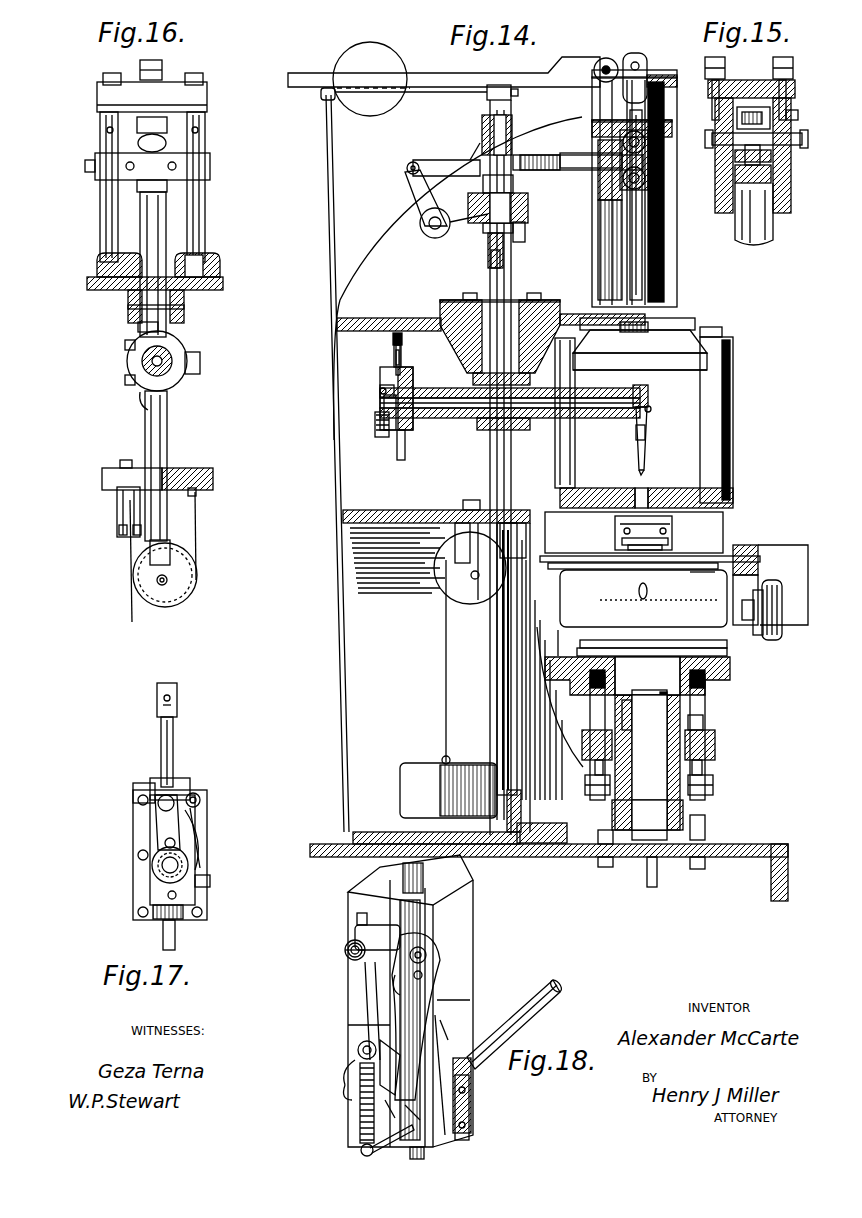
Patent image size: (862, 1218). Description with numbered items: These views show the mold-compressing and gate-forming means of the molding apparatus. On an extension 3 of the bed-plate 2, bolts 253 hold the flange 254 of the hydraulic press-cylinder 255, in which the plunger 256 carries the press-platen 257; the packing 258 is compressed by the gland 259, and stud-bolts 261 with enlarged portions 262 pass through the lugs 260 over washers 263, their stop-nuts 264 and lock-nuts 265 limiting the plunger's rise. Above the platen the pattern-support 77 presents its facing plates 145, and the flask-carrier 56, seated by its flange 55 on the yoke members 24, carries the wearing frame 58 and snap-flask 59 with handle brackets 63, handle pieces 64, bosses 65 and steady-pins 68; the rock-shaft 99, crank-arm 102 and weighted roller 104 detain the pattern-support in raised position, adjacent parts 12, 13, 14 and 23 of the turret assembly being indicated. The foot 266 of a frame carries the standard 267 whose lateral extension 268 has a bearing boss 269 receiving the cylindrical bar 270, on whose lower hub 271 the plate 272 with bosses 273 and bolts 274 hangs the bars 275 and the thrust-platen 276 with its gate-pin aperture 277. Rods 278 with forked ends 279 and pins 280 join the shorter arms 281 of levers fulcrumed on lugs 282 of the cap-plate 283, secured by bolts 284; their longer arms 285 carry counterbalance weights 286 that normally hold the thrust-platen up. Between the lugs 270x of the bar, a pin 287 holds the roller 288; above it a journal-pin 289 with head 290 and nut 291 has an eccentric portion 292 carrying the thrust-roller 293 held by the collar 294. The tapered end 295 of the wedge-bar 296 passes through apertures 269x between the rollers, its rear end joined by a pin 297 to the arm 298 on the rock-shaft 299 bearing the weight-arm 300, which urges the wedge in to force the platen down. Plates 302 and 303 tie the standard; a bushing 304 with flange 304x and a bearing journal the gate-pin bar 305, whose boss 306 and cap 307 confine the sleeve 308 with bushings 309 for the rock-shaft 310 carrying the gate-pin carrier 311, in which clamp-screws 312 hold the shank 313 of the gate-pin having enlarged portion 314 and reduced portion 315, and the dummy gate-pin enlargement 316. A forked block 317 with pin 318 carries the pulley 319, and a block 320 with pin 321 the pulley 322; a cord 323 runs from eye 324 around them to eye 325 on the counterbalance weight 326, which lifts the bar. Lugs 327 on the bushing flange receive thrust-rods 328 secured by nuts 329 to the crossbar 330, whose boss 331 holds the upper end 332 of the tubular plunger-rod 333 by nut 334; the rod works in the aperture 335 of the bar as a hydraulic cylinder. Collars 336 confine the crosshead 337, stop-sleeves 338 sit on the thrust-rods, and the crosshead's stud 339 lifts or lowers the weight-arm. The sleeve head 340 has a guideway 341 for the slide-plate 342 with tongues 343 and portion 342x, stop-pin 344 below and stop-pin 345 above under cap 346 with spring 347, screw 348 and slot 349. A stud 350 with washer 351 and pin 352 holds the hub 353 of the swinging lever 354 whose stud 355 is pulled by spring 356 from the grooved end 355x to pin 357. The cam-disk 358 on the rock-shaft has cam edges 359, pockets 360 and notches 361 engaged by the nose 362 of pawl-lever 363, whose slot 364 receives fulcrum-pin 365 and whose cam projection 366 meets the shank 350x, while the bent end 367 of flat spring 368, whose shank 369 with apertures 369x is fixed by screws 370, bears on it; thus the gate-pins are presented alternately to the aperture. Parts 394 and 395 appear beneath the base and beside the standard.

In FIG. 14, the frame bracket 2 is at (788, 872).
In FIG. 14, the base plate 3 is at (495, 858).
In FIG. 14, the side frame 12 is at (783, 585).
In FIG. 14, the bracket 13 is at (760, 552).
In FIG. 14, the plate 14 is at (715, 575).
In FIG. 14, the guide 23 is at (723, 603).
In FIG. 14, the carriage box 24 is at (643, 598).
In FIG. 14, the plate 55 is at (553, 556).
In FIG. 14, the rod 56 is at (557, 645).
In FIG. 14, the plate 58 is at (728, 556).
In FIG. 14, the housing 59 is at (634, 532).
In FIG. 14, the block 63 is at (672, 526).
In FIG. 14, the pin 64 is at (645, 522).
In FIG. 14, the bar 65 is at (630, 548).
In FIG. 14, the bar 68 is at (640, 551).
In FIG. 14, the plate 77 is at (580, 652).
In FIG. 14, the pinion 99 is at (744, 622).
In FIG. 14, the shaft 102 is at (752, 636).
In FIG. 14, the gear 104 is at (775, 640).
In FIG. 14, the plate 145 is at (700, 645).
In FIG. 14, the bolt 253 is at (705, 865).
In FIG. 14, the nut 254 is at (705, 825).
In FIG. 14, the hub lower portion 255 is at (683, 805).
In FIG. 14, the hub 256 is at (615, 808).
In FIG. 14, the base casting 257 is at (720, 686).
In FIG. 14, the spindle 258 is at (664, 715).
In FIG. 14, the bushing 259 is at (626, 715).
In FIG. 14, the collar 260 is at (582, 747).
In FIG. 14, the washer 261 is at (595, 768).
In FIG. 14, the bolt 262 is at (590, 713).
In FIG. 14, the washer 263 is at (705, 723).
In FIG. 14, the washer 264 is at (705, 768).
In FIG. 14, the nut 265 is at (649, 785).
In FIG. 14, the frame bottom 266 is at (380, 830).
In FIG. 14, the frame 267 is at (458, 474).
In FIG. 14, the cylinder 268 is at (623, 188).
In FIG. 14, the cylinder wall 269 is at (665, 207).
In FIG. 14, the wall portion 269x is at (660, 147).
In FIG. 14, the piston 270 is at (598, 218).
In FIG. 15, the piston 270 is at (754, 214).
In FIG. 15, the piston extension 270x is at (760, 155).
In FIG. 14, the cap plate 271 is at (605, 335).
In FIG. 14, the cross head 272 is at (640, 350).
In FIG. 14, the post 273 is at (733, 358).
In FIG. 14, the nut 274 is at (722, 330).
In FIG. 14, the post 275 is at (725, 437).
In FIG. 14, the cross plate 276 is at (672, 488).
In FIG. 14, the cross plate 277 is at (636, 488).
In FIG. 14, the rod 278 is at (626, 265).
In FIG. 14, the pin 279 is at (640, 68).
In FIG. 14, the link 280 is at (633, 55).
In FIG. 14, the pivot 281 is at (608, 58).
In FIG. 15, the nut 282 is at (712, 57).
In FIG. 14, the cap 283 is at (662, 77).
In FIG. 15, the cap 283 is at (750, 80).
In FIG. 15, the bolt 284 is at (786, 95).
In FIG. 14, the beam 285 is at (444, 72).
In FIG. 14, the weight 286 is at (370, 79).
In FIG. 15, the packing 287 is at (771, 160).
In FIG. 14, the packing ring 288 is at (646, 176).
In FIG. 15, the packing ring 288 is at (771, 175).
In FIG. 14, the bolt 289 is at (660, 133).
In FIG. 15, the bolt 289 is at (786, 118).
In FIG. 15, the pin 290 is at (798, 135).
In FIG. 14, the head 291 is at (656, 157).
In FIG. 14, the band 292 is at (618, 128).
In FIG. 15, the band 292 is at (754, 125).
In FIG. 14, the plate 293 is at (670, 125).
In FIG. 15, the plate 293 is at (744, 120).
In FIG. 14, the slot 294 is at (656, 188).
In FIG. 14, the arm 295 is at (591, 160).
In FIG. 14, the arm 296 is at (540, 156).
In FIG. 16, the arm 296 is at (138, 145).
In FIG. 14, the pivot 297 is at (413, 162).
In FIG. 14, the lever 298 is at (415, 212).
In FIG. 14, the roller 299 is at (428, 236).
In FIG. 14, the stop 300 is at (525, 240).
In FIG. 14, the plate 302 is at (380, 316).
In FIG. 16, the plate 302 is at (92, 290).
In FIG. 14, the plate 303 is at (375, 510).
In FIG. 16, the plate 303 is at (205, 465).
In FIG. 14, the bearing hub 304 is at (475, 345).
In FIG. 16, the bearing hub 304 is at (128, 316).
In FIG. 14, the bearing flange 304x is at (445, 305).
In FIG. 16, the bearing flange 304x is at (185, 258).
In FIG. 14, the shaft 305 is at (512, 279).
In FIG. 16, the shaft 305 is at (167, 447).
In FIG. 16, the nut 306 is at (185, 340).
In FIG. 16, the wheel 307 is at (127, 365).
In FIG. 14, the hub 308 is at (477, 424).
In FIG. 16, the hub 308 is at (170, 375).
In FIG. 14, the plate 309 is at (412, 420).
In FIG. 14, the rod 310 is at (420, 396).
In FIG. 17, the rod 310 is at (160, 870).
In FIG. 18, the rod 310 is at (528, 1013).
In FIG. 14, the block 311 is at (648, 393).
In FIG. 14, the pin 312 is at (651, 410).
In FIG. 14, the finger 313 is at (636, 426).
In FIG. 14, the collar 314 is at (645, 435).
In FIG. 16, the collar 314 is at (140, 400).
In FIG. 14, the tip 315 is at (645, 460).
In FIG. 16, the block 316 is at (200, 365).
In FIG. 16, the block 317 is at (178, 550).
In FIG. 16, the pin 318 is at (162, 585).
In FIG. 14, the disk 319 is at (500, 640).
In FIG. 16, the disk 319 is at (192, 592).
In FIG. 14, the bracket 320 is at (470, 563).
In FIG. 16, the bracket 320 is at (117, 508).
In FIG. 14, the nut 321 is at (463, 580).
In FIG. 16, the nut 321 is at (119, 532).
In FIG. 14, the wire 322 is at (473, 564).
In FIG. 16, the wire 322 is at (128, 556).
In FIG. 16, the cord 323 is at (197, 528).
In FIG. 16, the eye 324 is at (196, 493).
In FIG. 14, the cord 325 is at (450, 760).
In FIG. 14, the weight 326 is at (410, 770).
In FIG. 16, the bracket 327 is at (220, 265).
In FIG. 16, the post 328 is at (205, 213).
In FIG. 16, the nut 329 is at (103, 84).
In FIG. 16, the head 330 is at (152, 97).
In FIG. 16, the bolt 331 is at (162, 76).
In FIG. 14, the nut 332 is at (482, 125).
In FIG. 14, the sleeve 333 is at (488, 246).
In FIG. 14, the nut 334 is at (511, 102).
In FIG. 14, the pin 335 is at (490, 266).
In FIG. 14, the collar 336 is at (483, 180).
In FIG. 16, the collar 336 is at (167, 125).
In FIG. 14, the block 337 is at (528, 196).
In FIG. 16, the block 337 is at (210, 168).
In FIG. 16, the hole 338 is at (205, 120).
In FIG. 16, the stud 339 is at (86, 170).
In FIG. 14, the bracket 340 is at (413, 366).
In FIG. 17, the bracket 340 is at (133, 835).
In FIG. 14, the slide 341 is at (395, 367).
In FIG. 17, the slide 341 is at (158, 920).
In FIG. 17, the block 342 is at (190, 785).
In FIG. 18, the block 342 is at (410, 1001).
In FIG. 18, the block portion 342x is at (360, 1028).
In FIG. 17, the plate 343 is at (145, 783).
In FIG. 18, the plate 343 is at (462, 905).
In FIG. 14, the rod 344 is at (400, 455).
In FIG. 17, the rod 344 is at (175, 935).
In FIG. 18, the rod 344 is at (424, 1152).
In FIG. 17, the rod 345 is at (173, 745).
In FIG. 18, the rod 345 is at (423, 878).
In FIG. 14, the head 346 is at (402, 339).
In FIG. 17, the head 346 is at (177, 700).
In FIG. 14, the pin 347 is at (393, 340).
In FIG. 14, the pin 348 is at (393, 346).
In FIG. 17, the pin 348 is at (160, 708).
In FIG. 17, the hole 349 is at (163, 698).
In FIG. 14, the screw 350 is at (380, 389).
In FIG. 18, the screw 350 is at (345, 951).
In FIG. 18, the screw head 350x is at (360, 915).
In FIG. 18, the washer 351 is at (348, 945).
In FIG. 18, the pin 352 is at (348, 948).
In FIG. 18, the knob 353 is at (360, 928).
In FIG. 14, the lever 354 is at (384, 405).
In FIG. 17, the lever 354 is at (155, 820).
In FIG. 18, the lever 354 is at (365, 990).
In FIG. 18, the pivot 355 is at (358, 1048).
In FIG. 18, the pivot pin 355x is at (362, 1053).
In FIG. 14, the spring 356 is at (376, 428).
In FIG. 18, the spring 356 is at (360, 1112).
In FIG. 18, the pin 357 is at (361, 1152).
In FIG. 17, the pin 358 is at (168, 895).
In FIG. 18, the pin 358 is at (392, 1110).
In FIG. 18, the hook 359 is at (345, 1077).
In FIG. 18, the hook 360 is at (346, 1095).
In FIG. 18, the pawl 361 is at (405, 1060).
In FIG. 18, the pin 362 is at (419, 1115).
In FIG. 17, the link 363 is at (200, 825).
In FIG. 18, the link 363 is at (427, 1072).
In FIG. 18, the lever 364 is at (416, 1016).
In FIG. 17, the pin 365 is at (200, 803).
In FIG. 18, the pin 365 is at (417, 973).
In FIG. 18, the notch 366 is at (404, 985).
In FIG. 18, the pin 367 is at (455, 1000).
In FIG. 17, the link 368 is at (200, 840).
In FIG. 18, the link 368 is at (449, 1042).
In FIG. 18, the plate 369 is at (469, 1108).
In FIG. 18, the screw 369x is at (465, 1090).
In FIG. 17, the stop 370 is at (210, 885).
In FIG. 14, the rod 394 is at (647, 870).
In FIG. 14, the rod 395 is at (336, 200).